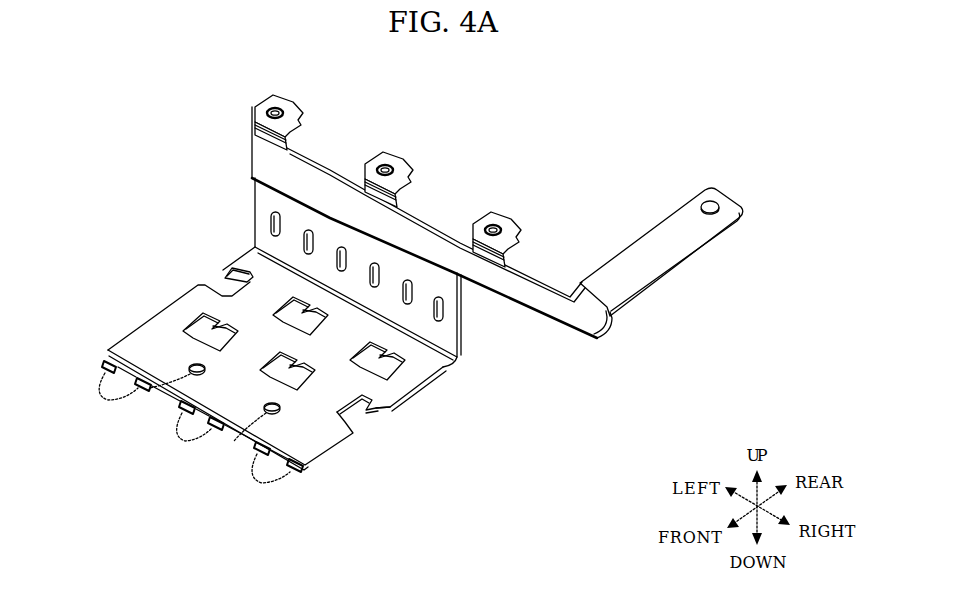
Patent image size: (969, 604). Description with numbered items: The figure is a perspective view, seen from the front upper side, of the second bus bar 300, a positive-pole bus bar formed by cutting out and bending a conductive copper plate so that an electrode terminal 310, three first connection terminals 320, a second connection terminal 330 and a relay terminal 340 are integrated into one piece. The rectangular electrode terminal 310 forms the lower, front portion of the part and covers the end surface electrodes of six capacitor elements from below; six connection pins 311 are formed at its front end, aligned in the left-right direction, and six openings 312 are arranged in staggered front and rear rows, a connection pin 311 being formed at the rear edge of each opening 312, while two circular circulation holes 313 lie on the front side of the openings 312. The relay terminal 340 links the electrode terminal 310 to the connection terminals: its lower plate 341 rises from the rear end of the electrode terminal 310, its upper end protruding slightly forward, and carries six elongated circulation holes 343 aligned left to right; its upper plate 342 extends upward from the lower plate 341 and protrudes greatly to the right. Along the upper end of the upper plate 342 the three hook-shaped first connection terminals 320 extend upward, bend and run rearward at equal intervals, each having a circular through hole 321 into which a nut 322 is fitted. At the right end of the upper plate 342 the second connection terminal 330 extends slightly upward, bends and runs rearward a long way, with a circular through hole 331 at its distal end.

The second bus bar 300 is at (510, 146).
The electrode terminal 310 is at (157, 337).
The connection pin 311 is at (230, 268).
The opening 312 is at (206, 283).
The circulation hole 313 is at (172, 386).
The first connection terminal 320 is at (295, 102).
The through hole 321 is at (274, 110).
The nut 322 is at (254, 106).
The second connection terminal 330 is at (660, 237).
The through hole 331 is at (706, 195).
The relay terminal 340 is at (463, 310).
The lower plate 341 is at (262, 205).
The upper plate 342 is at (262, 160).
The circulation hole 343 is at (308, 230).